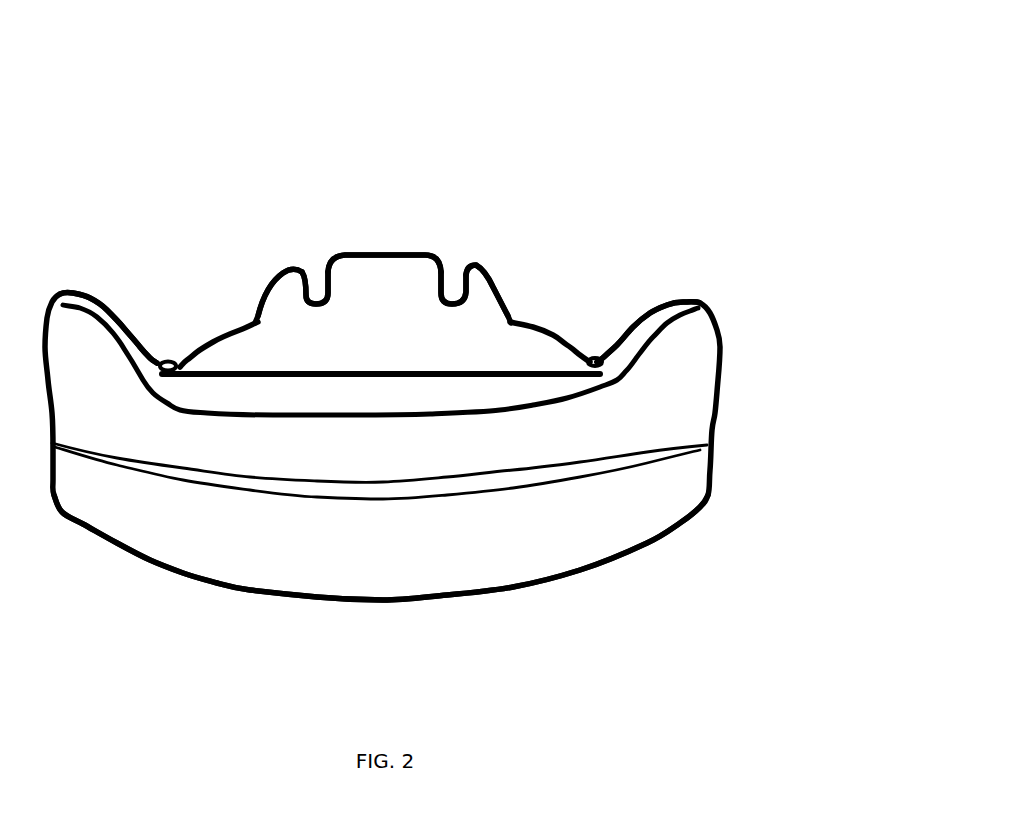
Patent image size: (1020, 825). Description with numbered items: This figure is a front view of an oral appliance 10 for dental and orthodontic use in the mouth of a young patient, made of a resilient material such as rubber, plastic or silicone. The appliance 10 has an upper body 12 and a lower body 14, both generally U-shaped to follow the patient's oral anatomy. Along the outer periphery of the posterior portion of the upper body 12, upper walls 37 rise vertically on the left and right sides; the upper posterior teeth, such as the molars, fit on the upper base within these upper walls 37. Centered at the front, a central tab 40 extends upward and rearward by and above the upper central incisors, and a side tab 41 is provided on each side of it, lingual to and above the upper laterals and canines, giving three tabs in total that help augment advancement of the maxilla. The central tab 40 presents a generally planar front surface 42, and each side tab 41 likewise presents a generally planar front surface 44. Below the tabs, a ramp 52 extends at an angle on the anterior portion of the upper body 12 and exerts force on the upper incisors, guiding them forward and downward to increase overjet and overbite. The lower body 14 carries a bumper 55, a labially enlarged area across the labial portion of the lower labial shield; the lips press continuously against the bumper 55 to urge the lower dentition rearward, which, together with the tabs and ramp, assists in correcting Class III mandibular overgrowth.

The appliance 10 is at (665, 118).
The upper body 12 is at (690, 340).
The lower body 14 is at (715, 469).
The upper walls 37 is at (92, 312).
The central tab 40 is at (390, 252).
The side tabs 41 is at (295, 260).
The front surface 42 is at (407, 276).
The front surface 44 is at (280, 297).
The ramp 52 is at (504, 355).
The bumper 55 is at (565, 535).